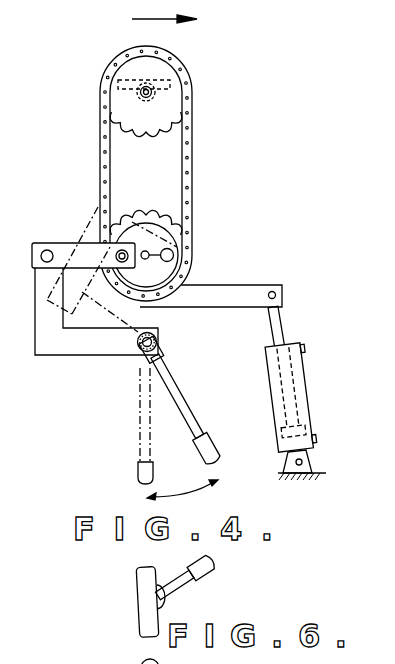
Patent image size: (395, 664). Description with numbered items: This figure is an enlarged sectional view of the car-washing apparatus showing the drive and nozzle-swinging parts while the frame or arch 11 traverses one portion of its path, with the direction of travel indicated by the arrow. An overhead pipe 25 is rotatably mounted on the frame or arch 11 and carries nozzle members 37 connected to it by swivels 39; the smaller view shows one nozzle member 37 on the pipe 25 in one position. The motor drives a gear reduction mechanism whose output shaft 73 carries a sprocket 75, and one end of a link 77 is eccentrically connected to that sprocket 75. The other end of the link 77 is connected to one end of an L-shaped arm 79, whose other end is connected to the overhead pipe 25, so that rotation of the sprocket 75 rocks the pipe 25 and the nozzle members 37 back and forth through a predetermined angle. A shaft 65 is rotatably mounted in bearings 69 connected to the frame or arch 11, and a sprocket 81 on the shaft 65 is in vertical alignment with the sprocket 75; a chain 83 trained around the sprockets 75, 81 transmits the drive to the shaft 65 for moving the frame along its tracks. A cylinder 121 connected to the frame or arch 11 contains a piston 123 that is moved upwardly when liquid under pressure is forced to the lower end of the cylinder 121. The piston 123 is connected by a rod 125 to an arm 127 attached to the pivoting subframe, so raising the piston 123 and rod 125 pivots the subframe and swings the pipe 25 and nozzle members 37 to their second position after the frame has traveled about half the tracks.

In FIG. 4, the frame or arch 11 is at (322, 473).
In FIG. 4, the overhead pipe 25 is at (158, 335).
In FIG. 6, the overhead pipe 25 is at (142, 622).
In FIG. 4, the nozzle member 37 is at (183, 413).
In FIG. 6, the nozzle member 37 is at (188, 585).
In FIG. 4, the swivel 39 is at (160, 348).
In FIG. 4, the shaft 65 is at (153, 97).
In FIG. 4, the bearings 69 is at (104, 71).
In FIG. 4, the output shaft 73 is at (192, 262).
In FIG. 4, the sprocket 75 is at (181, 233).
In FIG. 4, the link 77 is at (66, 250).
In FIG. 4, the L-shaped arm 79 is at (38, 323).
In FIG. 4, the sprocket 81 is at (165, 73).
In FIG. 4, the chain 83 is at (192, 160).
In FIG. 4, the cylinder 121 is at (303, 392).
In FIG. 4, the piston 123 is at (302, 420).
In FIG. 4, the rod 125 is at (280, 323).
In FIG. 4, the arm 127 is at (263, 287).